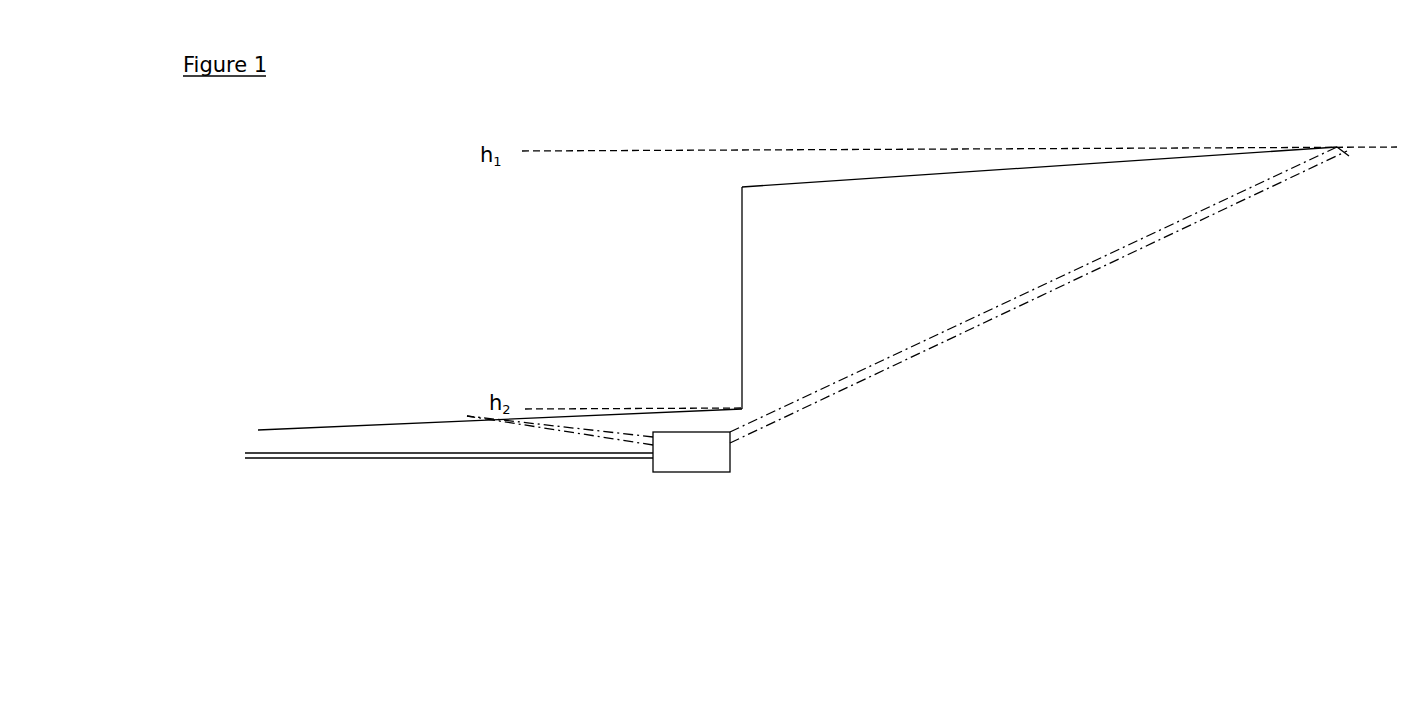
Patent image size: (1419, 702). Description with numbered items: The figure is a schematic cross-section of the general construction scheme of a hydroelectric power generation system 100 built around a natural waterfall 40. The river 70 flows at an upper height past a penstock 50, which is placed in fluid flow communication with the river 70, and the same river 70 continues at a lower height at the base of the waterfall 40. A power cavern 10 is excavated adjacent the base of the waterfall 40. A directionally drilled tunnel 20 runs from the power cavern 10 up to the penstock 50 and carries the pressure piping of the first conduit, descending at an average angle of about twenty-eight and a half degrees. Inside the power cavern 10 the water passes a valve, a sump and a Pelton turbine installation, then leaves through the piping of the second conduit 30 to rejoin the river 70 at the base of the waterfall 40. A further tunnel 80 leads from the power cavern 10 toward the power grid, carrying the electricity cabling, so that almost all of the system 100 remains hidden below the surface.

The power cavern 10 is at (710, 472).
The tunnel 20 is at (988, 320).
The second conduit 30 is at (582, 433).
The waterfall 40 is at (746, 262).
The penstock 50 is at (1347, 152).
The river 70 is at (1043, 168).
The tunnel 80 is at (410, 453).
The hydroelectric power generation system 100 is at (942, 537).